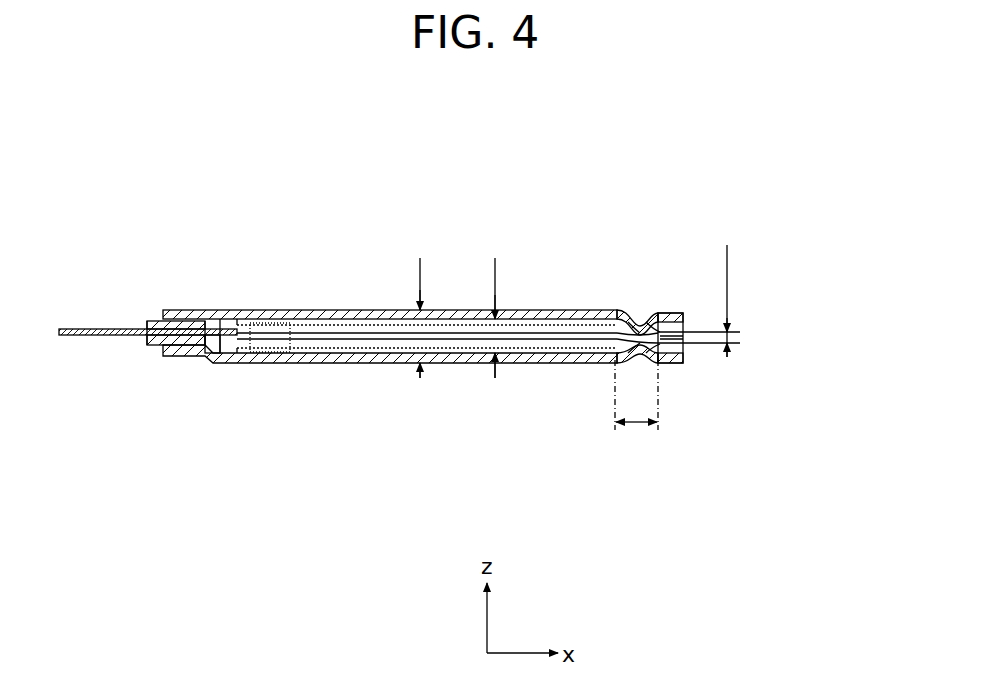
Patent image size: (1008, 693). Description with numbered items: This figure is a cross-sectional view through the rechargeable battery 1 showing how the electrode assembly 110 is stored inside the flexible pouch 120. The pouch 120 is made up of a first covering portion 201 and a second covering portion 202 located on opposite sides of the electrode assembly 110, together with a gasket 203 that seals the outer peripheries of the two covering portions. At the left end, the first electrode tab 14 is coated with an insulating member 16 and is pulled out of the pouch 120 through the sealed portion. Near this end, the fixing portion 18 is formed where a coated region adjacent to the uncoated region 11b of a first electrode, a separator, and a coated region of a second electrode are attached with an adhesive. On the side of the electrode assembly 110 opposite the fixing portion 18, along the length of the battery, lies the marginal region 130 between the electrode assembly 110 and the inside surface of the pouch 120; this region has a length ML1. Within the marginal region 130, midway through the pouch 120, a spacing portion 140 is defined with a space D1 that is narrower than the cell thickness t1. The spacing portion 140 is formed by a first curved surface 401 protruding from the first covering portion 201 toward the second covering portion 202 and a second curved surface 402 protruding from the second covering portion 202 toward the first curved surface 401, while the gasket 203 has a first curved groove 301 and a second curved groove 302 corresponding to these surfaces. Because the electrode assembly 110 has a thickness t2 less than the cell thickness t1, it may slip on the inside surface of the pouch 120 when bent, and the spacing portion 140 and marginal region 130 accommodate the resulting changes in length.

The rechargeable battery 1 is at (459, 160).
The first electrode tab 14 is at (80, 336).
The insulating member 16 is at (152, 349).
The uncoated region 11b is at (237, 364).
The fixing portion 18 is at (270, 364).
The electrode assembly 110 is at (350, 348).
The pouch 120 is at (816, 303).
The marginal region 130 is at (620, 310).
The spacing portion 140 is at (645, 310).
The first covering portion 201 is at (688, 362).
The second covering portion 202 is at (683, 314).
The gasket 203 is at (683, 343).
The first curved groove 301 is at (627, 363).
The second curved groove 302 is at (636, 313).
The first curved surface 401 is at (640, 367).
The second curved surface 402 is at (668, 318).
The space D1 is at (743, 301).
The length of the marginal region ML1 is at (636, 410).
The cell thickness t1 is at (407, 318).
The electrode assembly thickness t2 is at (482, 318).